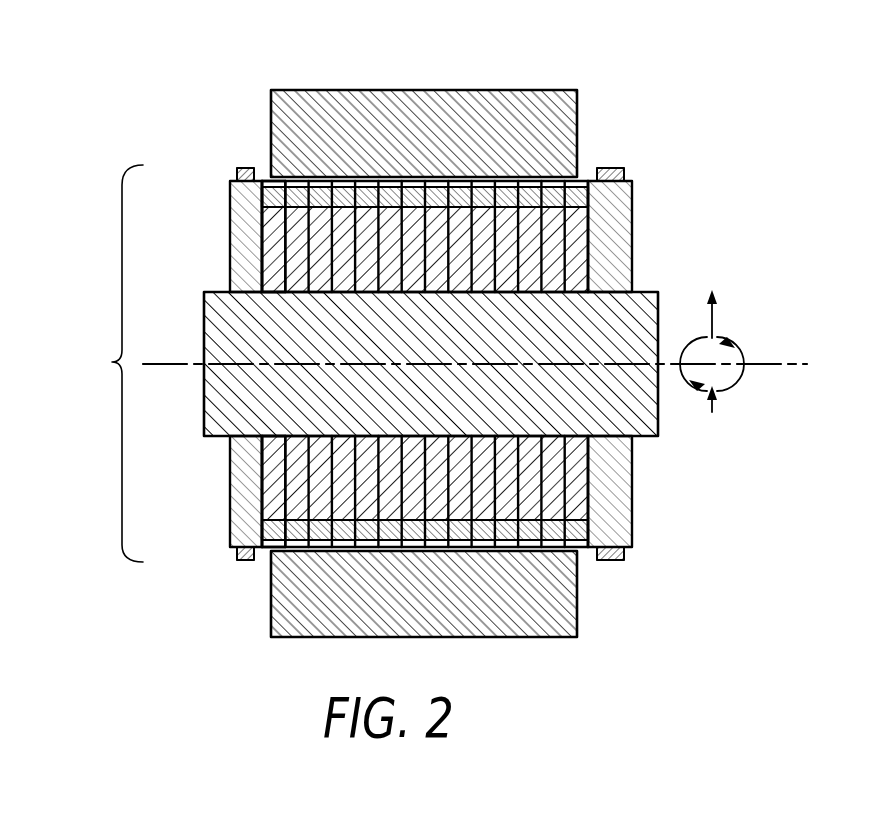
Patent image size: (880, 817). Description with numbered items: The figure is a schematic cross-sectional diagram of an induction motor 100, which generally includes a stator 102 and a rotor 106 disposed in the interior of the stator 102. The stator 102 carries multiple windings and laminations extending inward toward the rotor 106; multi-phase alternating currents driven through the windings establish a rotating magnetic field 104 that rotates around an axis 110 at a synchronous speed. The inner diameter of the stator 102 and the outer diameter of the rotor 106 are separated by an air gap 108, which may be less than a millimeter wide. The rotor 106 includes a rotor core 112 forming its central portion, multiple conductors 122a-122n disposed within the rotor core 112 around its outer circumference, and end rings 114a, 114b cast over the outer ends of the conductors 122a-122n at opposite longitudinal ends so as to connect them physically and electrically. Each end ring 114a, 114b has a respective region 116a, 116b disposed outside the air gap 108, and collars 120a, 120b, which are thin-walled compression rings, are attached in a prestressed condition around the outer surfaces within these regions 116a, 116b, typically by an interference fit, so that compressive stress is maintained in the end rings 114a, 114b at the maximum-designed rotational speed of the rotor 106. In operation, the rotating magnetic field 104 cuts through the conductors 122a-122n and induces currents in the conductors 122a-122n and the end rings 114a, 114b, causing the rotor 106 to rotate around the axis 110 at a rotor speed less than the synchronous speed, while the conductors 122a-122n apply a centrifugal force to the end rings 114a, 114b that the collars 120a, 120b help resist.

The induction motor 100 is at (202, 92).
The stator 102 is at (520, 90).
The rotating magnetic field 104 is at (746, 294).
The rotor 106 is at (112, 362).
The air gap 108 is at (579, 177).
The axis 110 is at (770, 364).
The rotor core 112 is at (643, 437).
The end ring 114a is at (228, 222).
The end ring 114b is at (633, 225).
The region 116a is at (235, 553).
The region 116b is at (628, 550).
The collar 120a is at (242, 167).
The collar 120b is at (616, 168).
The conductor 122a is at (268, 195).
The conductor 122n is at (272, 530).